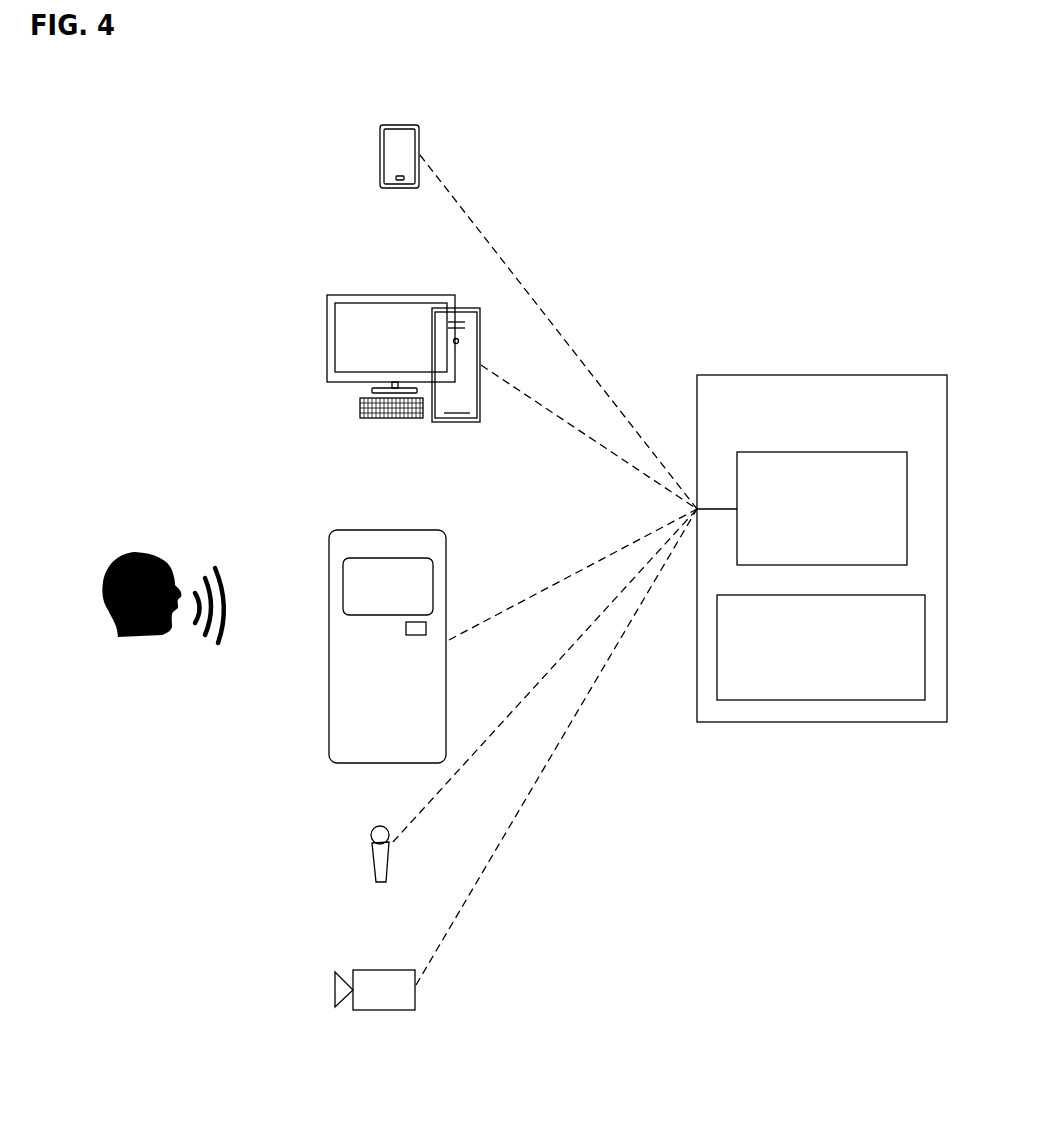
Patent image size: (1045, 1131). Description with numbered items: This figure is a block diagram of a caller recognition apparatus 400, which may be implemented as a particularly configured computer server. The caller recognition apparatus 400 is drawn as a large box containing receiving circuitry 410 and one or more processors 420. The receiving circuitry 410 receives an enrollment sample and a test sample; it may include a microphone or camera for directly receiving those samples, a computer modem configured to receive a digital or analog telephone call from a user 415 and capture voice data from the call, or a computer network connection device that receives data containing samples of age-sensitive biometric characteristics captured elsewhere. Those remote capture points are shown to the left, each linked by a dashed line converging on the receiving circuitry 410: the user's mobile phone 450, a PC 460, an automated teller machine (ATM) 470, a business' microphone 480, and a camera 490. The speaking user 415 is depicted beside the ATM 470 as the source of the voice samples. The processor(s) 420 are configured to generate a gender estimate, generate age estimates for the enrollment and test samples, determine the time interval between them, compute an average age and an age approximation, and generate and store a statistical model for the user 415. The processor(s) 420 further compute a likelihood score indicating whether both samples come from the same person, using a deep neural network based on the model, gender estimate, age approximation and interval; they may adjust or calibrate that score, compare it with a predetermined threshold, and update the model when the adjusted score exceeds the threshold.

The caller recognition apparatus 400 is at (822, 548).
The receiving circuitry 410 is at (822, 508).
The processor(s) 420 is at (821, 647).
The user 415 is at (118, 634).
The mobile phone 450 is at (382, 189).
The PC 460 is at (360, 410).
The automated teller machine (ATM) 470 is at (329, 713).
The microphone 480 is at (373, 858).
The camera 490 is at (352, 1010).